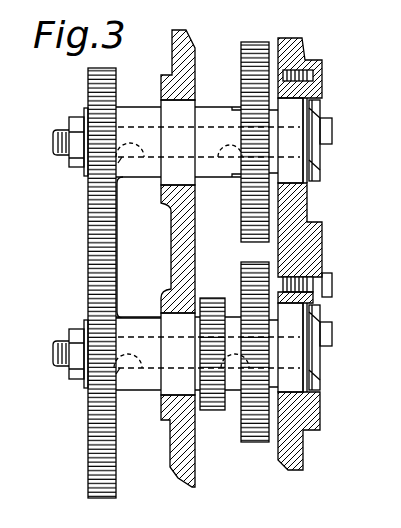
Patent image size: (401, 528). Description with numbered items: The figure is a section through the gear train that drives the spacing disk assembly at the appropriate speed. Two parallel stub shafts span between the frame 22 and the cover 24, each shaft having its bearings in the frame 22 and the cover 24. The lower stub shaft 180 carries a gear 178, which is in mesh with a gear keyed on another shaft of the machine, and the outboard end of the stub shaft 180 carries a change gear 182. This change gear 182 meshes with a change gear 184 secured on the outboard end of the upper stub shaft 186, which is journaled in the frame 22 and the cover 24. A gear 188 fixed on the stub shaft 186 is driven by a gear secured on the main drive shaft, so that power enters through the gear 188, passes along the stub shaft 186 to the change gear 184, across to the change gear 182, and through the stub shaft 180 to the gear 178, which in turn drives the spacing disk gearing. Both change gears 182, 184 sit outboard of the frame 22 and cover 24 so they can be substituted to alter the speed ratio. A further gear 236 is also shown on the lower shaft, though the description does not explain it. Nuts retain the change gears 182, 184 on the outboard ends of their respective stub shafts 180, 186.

The frame 22 is at (288, 37).
The cover 24 is at (172, 47).
The gear 178 is at (207, 410).
The stub shaft 180 is at (68, 338).
The change gear 182 is at (88, 268).
The change gear 184 is at (84, 283).
The stub shaft 186 is at (53, 142).
The gear 188 is at (263, 27).
The gear 236 is at (250, 443).